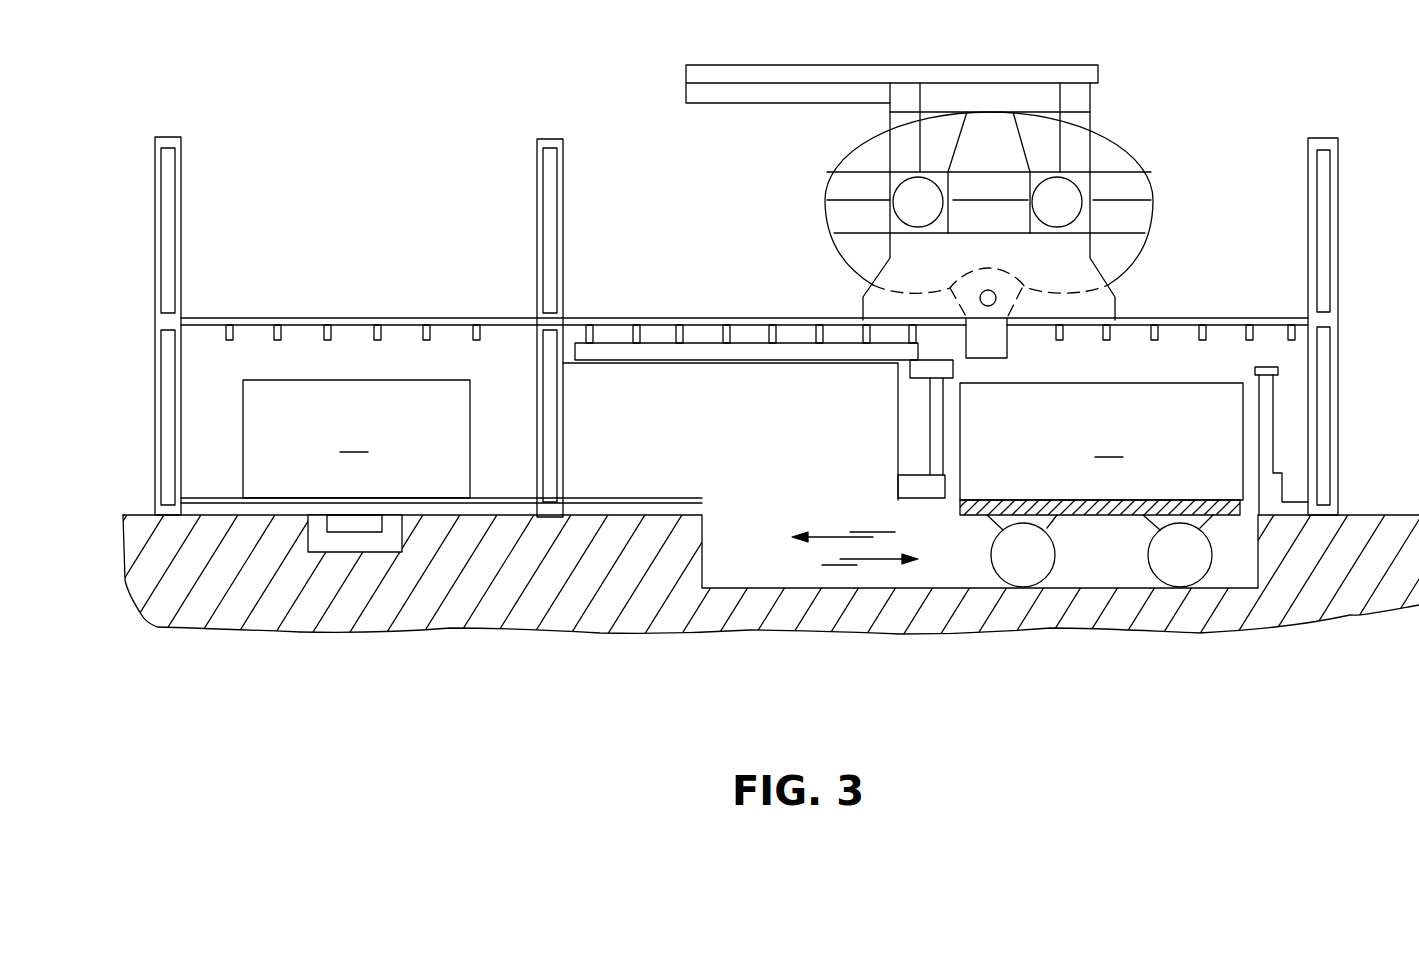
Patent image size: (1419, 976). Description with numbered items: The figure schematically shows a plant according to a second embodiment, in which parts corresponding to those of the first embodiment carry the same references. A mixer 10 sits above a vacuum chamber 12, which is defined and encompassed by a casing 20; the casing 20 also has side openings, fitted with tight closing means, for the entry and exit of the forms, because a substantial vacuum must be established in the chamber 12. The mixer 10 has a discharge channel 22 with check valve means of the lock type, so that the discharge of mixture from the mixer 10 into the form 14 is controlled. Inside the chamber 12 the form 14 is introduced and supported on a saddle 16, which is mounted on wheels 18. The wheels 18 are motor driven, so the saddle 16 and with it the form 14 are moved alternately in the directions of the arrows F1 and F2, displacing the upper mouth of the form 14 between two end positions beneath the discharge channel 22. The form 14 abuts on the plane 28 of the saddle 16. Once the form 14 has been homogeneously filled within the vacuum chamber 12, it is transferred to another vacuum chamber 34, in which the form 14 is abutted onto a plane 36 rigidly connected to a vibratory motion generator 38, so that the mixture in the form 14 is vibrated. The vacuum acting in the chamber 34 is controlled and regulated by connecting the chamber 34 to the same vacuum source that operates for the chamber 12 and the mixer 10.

The mixer 10 is at (1143, 131).
The vacuum chamber 12 is at (1248, 362).
The form 14 is at (791, 441).
The saddle 16 is at (1242, 529).
The wheels 18 is at (1017, 573).
The casing 20 is at (1338, 167).
The discharge channel 22 is at (990, 343).
The plane of the saddle 28 is at (1197, 498).
The vacuum chamber 34 is at (307, 370).
The plane 36 is at (258, 498).
The vibratory motion generator 38 is at (358, 523).
The arrow F1 is at (823, 540).
The arrow F2 is at (873, 561).